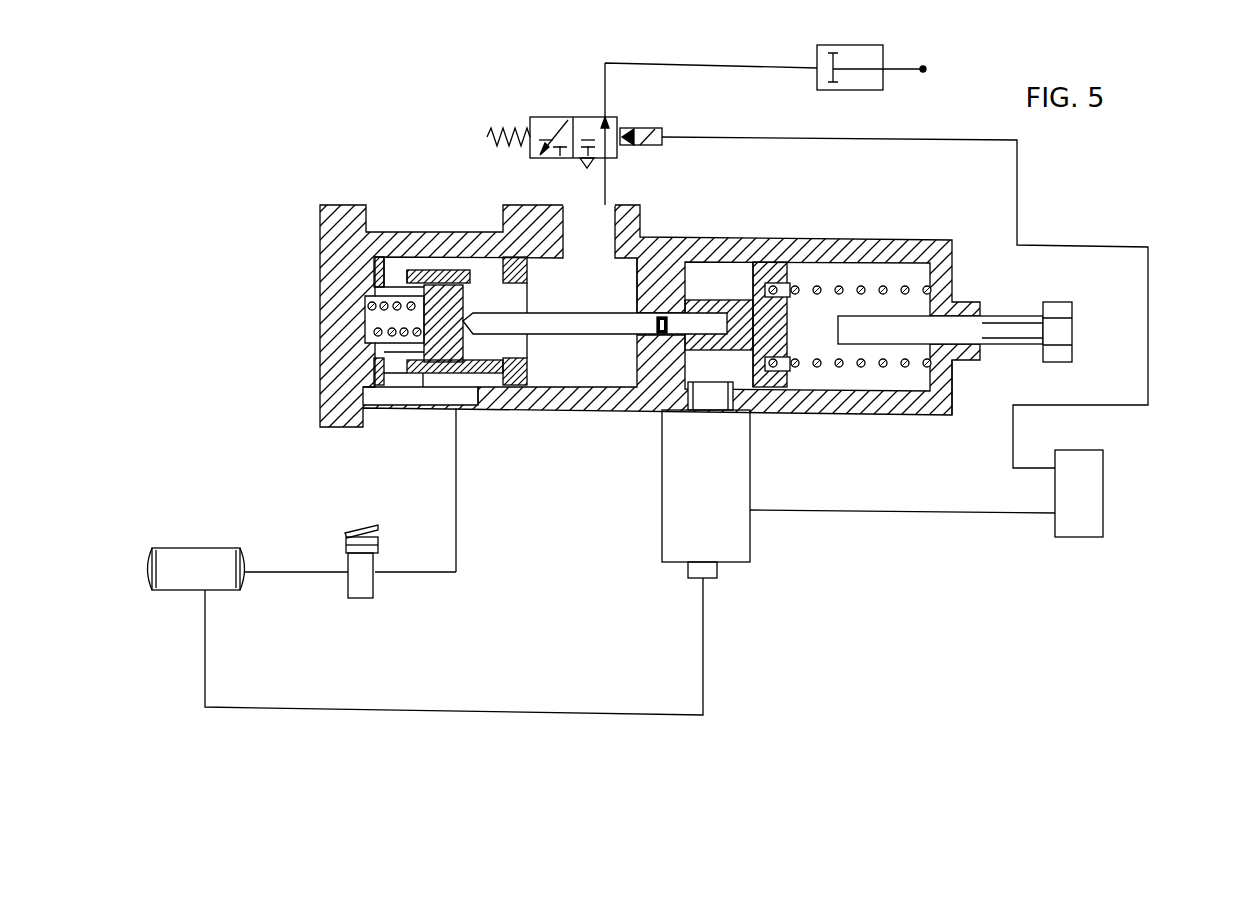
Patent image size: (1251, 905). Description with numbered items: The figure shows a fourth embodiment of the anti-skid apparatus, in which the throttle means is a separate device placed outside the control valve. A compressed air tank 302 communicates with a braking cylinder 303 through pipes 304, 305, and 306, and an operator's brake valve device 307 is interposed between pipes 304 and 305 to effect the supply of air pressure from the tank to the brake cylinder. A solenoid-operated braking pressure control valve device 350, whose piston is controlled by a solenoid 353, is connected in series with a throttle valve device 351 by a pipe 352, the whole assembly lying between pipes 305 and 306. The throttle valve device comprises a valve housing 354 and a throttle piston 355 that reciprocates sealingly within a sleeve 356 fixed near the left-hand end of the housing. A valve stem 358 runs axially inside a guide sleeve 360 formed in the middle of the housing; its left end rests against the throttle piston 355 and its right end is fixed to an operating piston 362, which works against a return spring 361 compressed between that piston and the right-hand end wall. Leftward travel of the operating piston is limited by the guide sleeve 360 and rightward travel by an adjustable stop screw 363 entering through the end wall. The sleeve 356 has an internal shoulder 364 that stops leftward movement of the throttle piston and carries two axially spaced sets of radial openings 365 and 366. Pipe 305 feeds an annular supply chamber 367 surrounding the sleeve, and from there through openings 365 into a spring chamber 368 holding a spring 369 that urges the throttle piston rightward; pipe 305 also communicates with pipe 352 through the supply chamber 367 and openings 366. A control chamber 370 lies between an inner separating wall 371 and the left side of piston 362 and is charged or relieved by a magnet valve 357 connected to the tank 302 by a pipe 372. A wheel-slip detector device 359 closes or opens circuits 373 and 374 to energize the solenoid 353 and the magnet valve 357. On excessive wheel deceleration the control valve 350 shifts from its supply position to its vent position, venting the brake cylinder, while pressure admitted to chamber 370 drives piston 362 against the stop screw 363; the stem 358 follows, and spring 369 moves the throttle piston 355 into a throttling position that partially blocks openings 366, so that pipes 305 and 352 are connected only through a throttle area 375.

The compressed air tank 302 is at (215, 582).
The braking cylinder 303 is at (867, 55).
The pipe 304 is at (292, 572).
The pipe 305 is at (458, 540).
The pipe 306 is at (637, 62).
The operator's brake valve device 307 is at (363, 587).
The braking pressure control valve device 350 is at (538, 114).
The throttle valve device 351 is at (822, 231).
The pipe 352 is at (606, 182).
The solenoid 353 is at (640, 130).
The valve housing 354 is at (912, 406).
The throttle piston 355 is at (447, 375).
The sleeve 356 is at (430, 377).
The magnet valve 357 is at (725, 542).
The valve stem 358 is at (641, 327).
The wheel-slip detector device 359 is at (1068, 522).
The guide sleeve 360 is at (727, 310).
The return spring 361 is at (880, 290).
The operating piston 362 is at (776, 378).
The adjustable stop screw 363 is at (1010, 333).
The internal shoulder 364 is at (413, 252).
The radial openings 365 is at (382, 278).
The radial openings 366 is at (498, 342).
The annular supply chamber 367 is at (434, 265).
The spring chamber 368 is at (373, 315).
The spring 369 is at (365, 332).
The control chamber 370 is at (733, 380).
The inner separating wall 371 is at (668, 287).
The pipe 372 is at (437, 709).
The circuit 373 is at (1148, 290).
The circuit 374 is at (860, 513).
The throttle area 375 is at (497, 272).